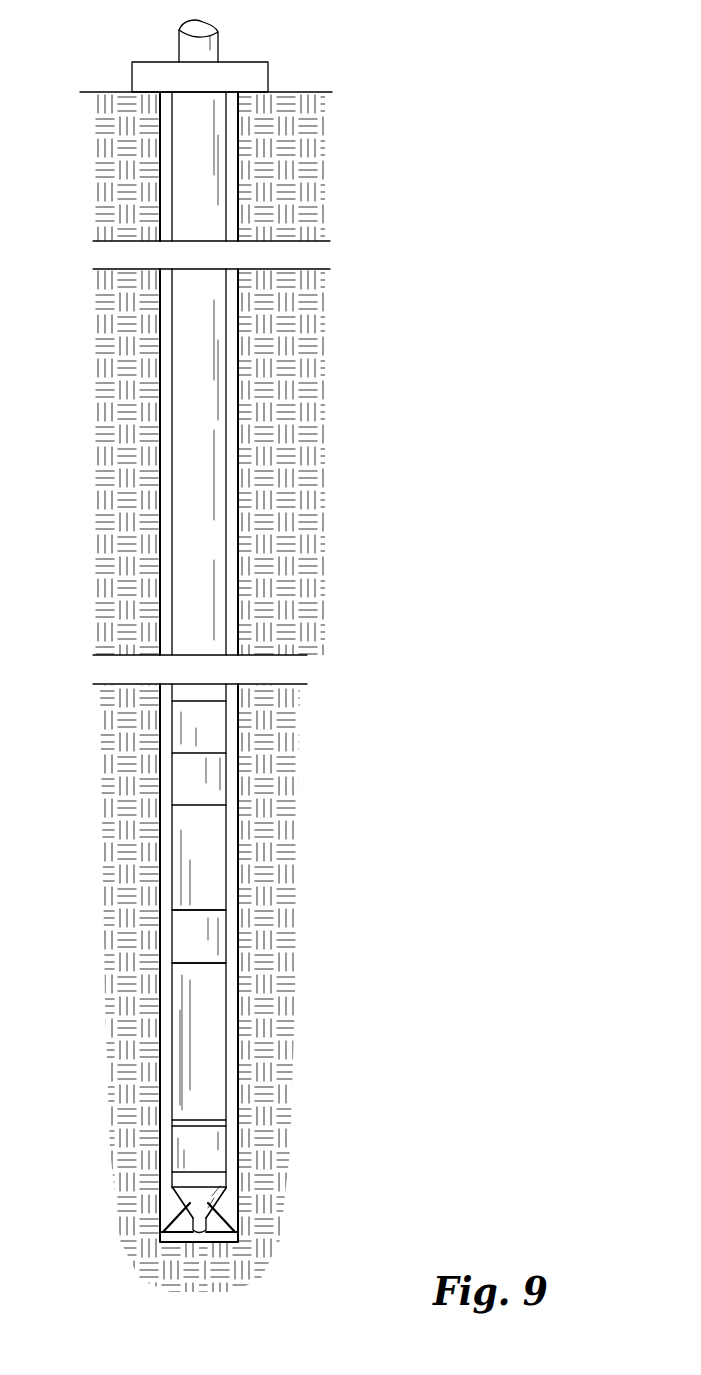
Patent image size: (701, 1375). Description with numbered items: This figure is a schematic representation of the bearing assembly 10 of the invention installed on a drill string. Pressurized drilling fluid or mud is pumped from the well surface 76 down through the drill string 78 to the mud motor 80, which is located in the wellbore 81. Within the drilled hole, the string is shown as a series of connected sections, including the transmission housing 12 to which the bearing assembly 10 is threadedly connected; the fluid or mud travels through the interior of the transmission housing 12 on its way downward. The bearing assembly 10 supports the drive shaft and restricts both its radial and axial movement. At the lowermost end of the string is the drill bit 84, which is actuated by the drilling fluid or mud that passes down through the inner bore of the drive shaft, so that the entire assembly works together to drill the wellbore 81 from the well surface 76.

The well surface 76 is at (242, 70).
The drill string 78 is at (223, 187).
The mud motor 80 is at (314, 829).
The bearing assembly 10 is at (205, 936).
The transmission housing 12 is at (187, 938).
The wellbore 81 is at (232, 1122).
The drill bit 84 is at (173, 1218).